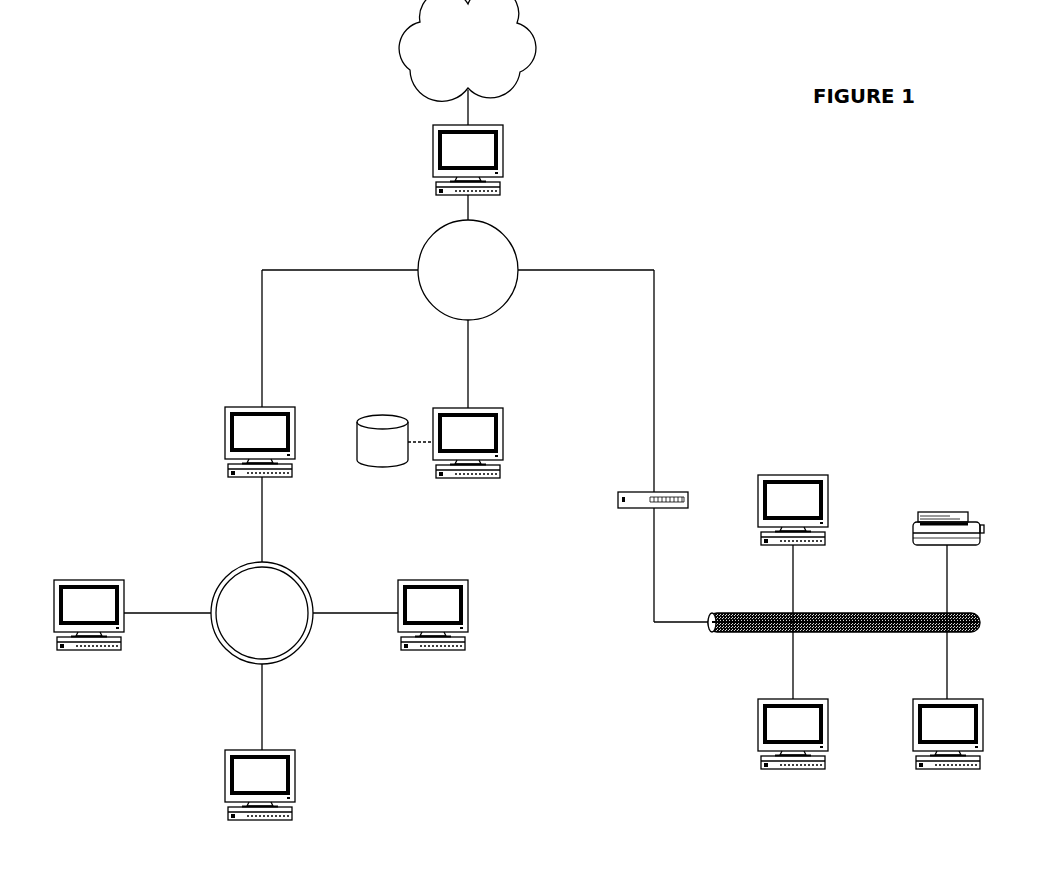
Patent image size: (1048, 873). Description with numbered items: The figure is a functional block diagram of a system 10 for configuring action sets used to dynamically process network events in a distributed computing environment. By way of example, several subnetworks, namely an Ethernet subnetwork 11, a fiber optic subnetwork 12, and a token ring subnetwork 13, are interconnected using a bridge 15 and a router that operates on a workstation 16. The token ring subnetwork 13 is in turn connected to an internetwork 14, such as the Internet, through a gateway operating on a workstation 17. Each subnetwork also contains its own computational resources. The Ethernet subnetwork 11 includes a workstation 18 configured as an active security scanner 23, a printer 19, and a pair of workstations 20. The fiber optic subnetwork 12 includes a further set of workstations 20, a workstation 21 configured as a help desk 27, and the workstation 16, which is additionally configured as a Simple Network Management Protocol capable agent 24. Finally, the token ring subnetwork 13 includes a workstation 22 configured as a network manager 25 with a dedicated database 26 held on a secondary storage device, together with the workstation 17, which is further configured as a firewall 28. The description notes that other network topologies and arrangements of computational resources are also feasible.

The system 10 is at (113, 93).
The Ethernet subnetwork 11 is at (961, 616).
The fiber optic subnetwork 12 is at (222, 648).
The token ring subnetwork 13 is at (498, 228).
The internetwork 14 is at (405, 73).
The bridge 15 is at (670, 492).
The workstation 16 is at (225, 426).
The workstation 17 is at (504, 142).
The workstation 18 is at (829, 490).
The printer 19 is at (984, 526).
The workstations 20 is at (125, 597).
The workstation 21 is at (296, 768).
The workstation 22 is at (504, 425).
The active security scanner 23 is at (780, 481).
The SNMP-capable agent 24 is at (247, 414).
The network manager 25 is at (456, 415).
The database 26 is at (357, 449).
The help desk 27 is at (248, 757).
The firewall 28 is at (452, 133).